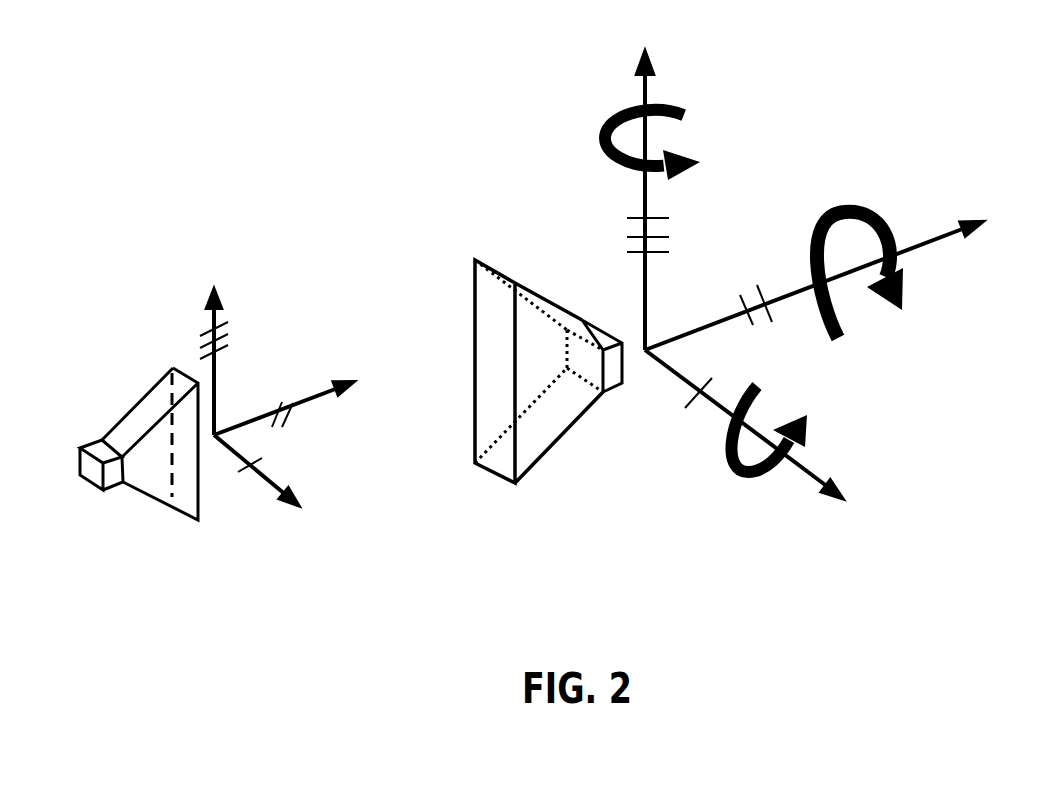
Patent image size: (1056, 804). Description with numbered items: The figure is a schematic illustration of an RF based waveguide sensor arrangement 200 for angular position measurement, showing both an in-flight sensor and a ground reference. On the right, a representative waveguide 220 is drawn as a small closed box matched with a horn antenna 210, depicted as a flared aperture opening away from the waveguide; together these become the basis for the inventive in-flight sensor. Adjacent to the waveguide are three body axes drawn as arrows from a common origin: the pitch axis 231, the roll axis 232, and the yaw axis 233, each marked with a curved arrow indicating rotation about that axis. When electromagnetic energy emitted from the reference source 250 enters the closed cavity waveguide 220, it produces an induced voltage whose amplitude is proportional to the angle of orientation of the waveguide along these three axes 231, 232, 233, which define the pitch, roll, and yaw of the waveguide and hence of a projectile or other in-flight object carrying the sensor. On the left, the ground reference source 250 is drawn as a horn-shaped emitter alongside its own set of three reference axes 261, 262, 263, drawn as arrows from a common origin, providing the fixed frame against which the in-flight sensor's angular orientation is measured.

The imaging system with in-flight sensor and ground reference 200 is at (962, 92).
The horn antenna 210 is at (503, 483).
The waveguide 220 is at (607, 392).
The pitch axis 231 is at (662, 75).
The roll axis 232 is at (925, 233).
The yaw axis 233 is at (820, 475).
The reference source 250 is at (142, 493).
The ground reference vertical axis 261 is at (228, 295).
The ground reference horizontal axis 262 is at (300, 390).
The ground reference depth axis 263 is at (298, 513).